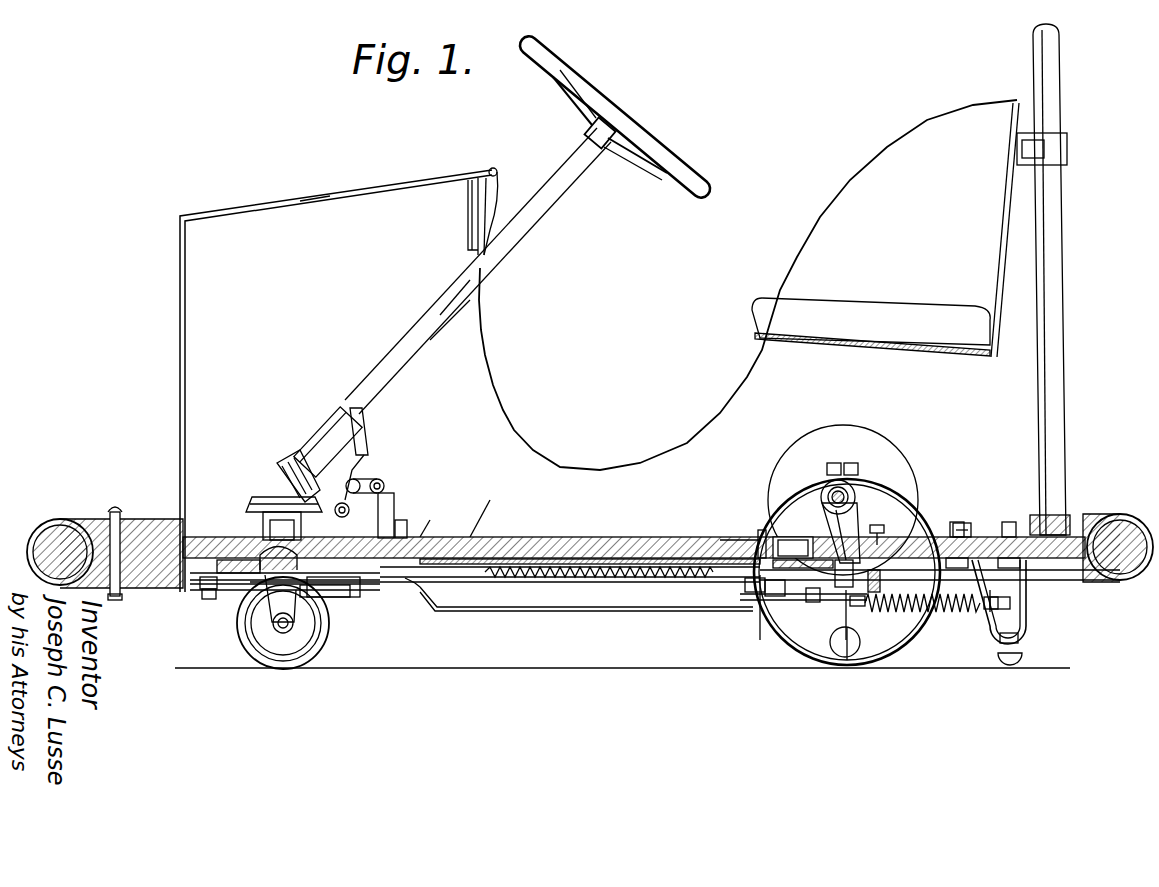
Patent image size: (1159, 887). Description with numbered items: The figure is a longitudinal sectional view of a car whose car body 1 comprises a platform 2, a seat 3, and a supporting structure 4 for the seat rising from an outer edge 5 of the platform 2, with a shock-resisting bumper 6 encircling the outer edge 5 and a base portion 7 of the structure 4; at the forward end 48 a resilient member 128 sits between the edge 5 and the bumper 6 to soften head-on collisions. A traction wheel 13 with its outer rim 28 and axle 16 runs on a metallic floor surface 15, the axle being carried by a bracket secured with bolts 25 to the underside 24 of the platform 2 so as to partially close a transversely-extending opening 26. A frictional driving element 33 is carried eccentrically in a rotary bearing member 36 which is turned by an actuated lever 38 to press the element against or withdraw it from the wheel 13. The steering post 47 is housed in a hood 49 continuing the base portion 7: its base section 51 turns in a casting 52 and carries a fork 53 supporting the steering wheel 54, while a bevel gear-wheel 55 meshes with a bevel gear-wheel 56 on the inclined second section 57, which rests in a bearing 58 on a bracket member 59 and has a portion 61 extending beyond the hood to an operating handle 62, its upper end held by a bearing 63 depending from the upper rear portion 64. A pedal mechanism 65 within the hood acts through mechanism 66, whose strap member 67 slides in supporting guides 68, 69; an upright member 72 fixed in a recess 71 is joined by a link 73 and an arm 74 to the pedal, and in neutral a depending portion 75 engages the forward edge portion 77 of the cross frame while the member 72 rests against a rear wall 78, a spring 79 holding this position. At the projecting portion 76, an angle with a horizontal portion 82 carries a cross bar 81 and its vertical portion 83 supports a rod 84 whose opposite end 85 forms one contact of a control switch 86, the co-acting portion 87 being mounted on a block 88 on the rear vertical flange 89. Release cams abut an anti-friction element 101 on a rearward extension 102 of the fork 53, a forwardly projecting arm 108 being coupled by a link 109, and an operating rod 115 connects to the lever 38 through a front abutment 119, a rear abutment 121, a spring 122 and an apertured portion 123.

The car body 1 is at (748, 285).
The platform 2 is at (598, 537).
The seat 3 is at (856, 298).
The supporting structure 4 is at (990, 360).
The outer edge 5 is at (1036, 522).
The bumper 6 is at (62, 520).
The base portion 7 is at (1030, 574).
The traction wheel 13 is at (880, 525).
The metallic floor surface 15 is at (712, 668).
The axle 16 is at (841, 545).
The underside 24 is at (520, 559).
The bolts 25 is at (794, 546).
The transversely-extending opening 26 is at (785, 537).
The outer rim 28 is at (852, 495).
The frictional driving element 33 is at (846, 490).
The rotary bearing member 36 is at (858, 476).
The actuated lever 38 is at (826, 520).
The steering post 47 is at (458, 286).
The forward end 48 is at (336, 381).
The hood 49 is at (296, 203).
The base section 51 is at (270, 550).
The casting 52 is at (238, 574).
The fork 53 is at (300, 612).
The steering wheel 54 is at (329, 657).
The bevel gear-wheel 55 is at (255, 497).
The bevel gear-wheel 56 is at (280, 465).
The second section 57 is at (410, 360).
The bearing 58 is at (314, 448).
The bracket member 59 is at (370, 470).
The portion 61 is at (556, 190).
The operating handle 62 is at (628, 122).
The bearing 63 is at (468, 240).
The upper rear portion 64 is at (482, 175).
The pedal mechanism 65 is at (372, 424).
The mechanism 66 is at (490, 500).
The strap member 67 is at (530, 580).
The supporting guide 68 is at (430, 590).
The supporting guide 69 is at (760, 530).
The recess 71 is at (408, 520).
The upright member 72 is at (396, 505).
The link 73 is at (375, 478).
The arm 74 is at (386, 484).
The depending portion 75 is at (775, 568).
The projecting portion 76 is at (755, 594).
The forward edge portion 77 is at (758, 528).
The rear wall 78 is at (418, 525).
The spring 79 is at (598, 585).
The cross bar 81 is at (813, 602).
The horizontal portion 82 is at (775, 600).
The vertical portion 83 is at (768, 596).
The rod 84 is at (838, 656).
The opposite end 85 is at (950, 614).
The control switch 86 is at (887, 579).
The co-acting portion 87 is at (880, 606).
The block 88 is at (882, 520).
The rear vertical flange 89 is at (858, 664).
The anti-friction element 101 is at (362, 596).
The rearward extension 102 is at (330, 597).
The forwardly projecting arm 108 is at (200, 586).
The link 109 is at (205, 599).
The operating rod 115 is at (650, 612).
The front abutment 119 is at (838, 600).
The rear abutment 121 is at (1013, 620).
The spring 122 is at (984, 612).
The apertured portion 123 is at (848, 660).
The resilient member 128 is at (135, 520).